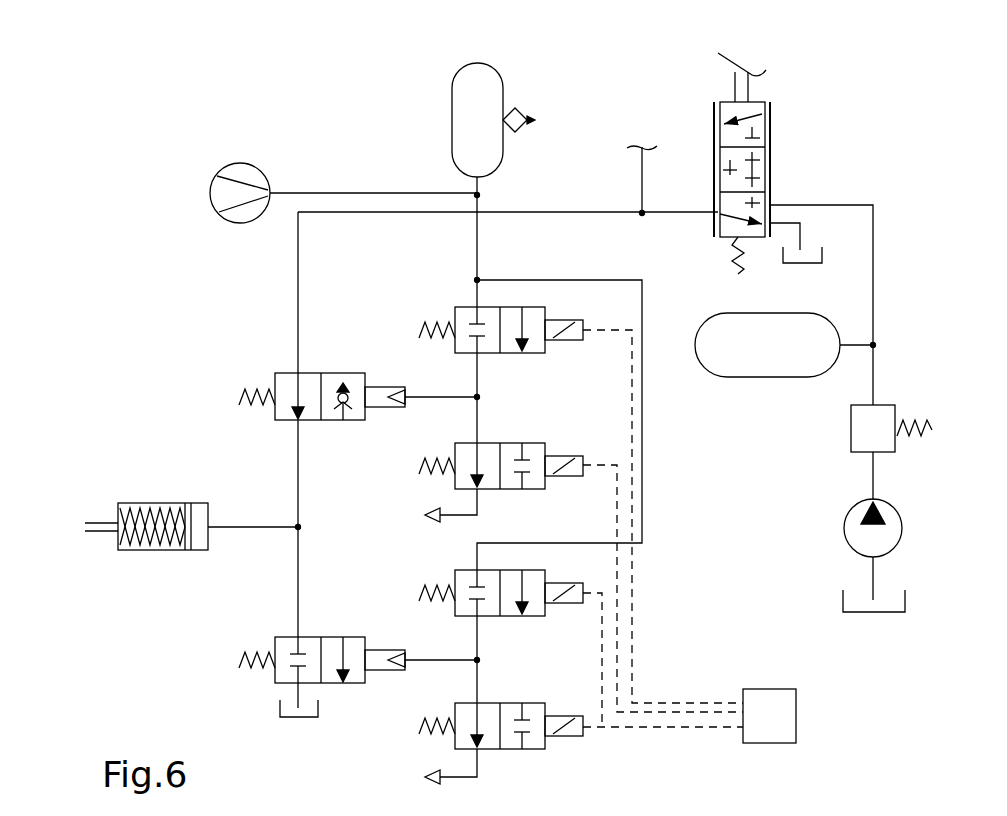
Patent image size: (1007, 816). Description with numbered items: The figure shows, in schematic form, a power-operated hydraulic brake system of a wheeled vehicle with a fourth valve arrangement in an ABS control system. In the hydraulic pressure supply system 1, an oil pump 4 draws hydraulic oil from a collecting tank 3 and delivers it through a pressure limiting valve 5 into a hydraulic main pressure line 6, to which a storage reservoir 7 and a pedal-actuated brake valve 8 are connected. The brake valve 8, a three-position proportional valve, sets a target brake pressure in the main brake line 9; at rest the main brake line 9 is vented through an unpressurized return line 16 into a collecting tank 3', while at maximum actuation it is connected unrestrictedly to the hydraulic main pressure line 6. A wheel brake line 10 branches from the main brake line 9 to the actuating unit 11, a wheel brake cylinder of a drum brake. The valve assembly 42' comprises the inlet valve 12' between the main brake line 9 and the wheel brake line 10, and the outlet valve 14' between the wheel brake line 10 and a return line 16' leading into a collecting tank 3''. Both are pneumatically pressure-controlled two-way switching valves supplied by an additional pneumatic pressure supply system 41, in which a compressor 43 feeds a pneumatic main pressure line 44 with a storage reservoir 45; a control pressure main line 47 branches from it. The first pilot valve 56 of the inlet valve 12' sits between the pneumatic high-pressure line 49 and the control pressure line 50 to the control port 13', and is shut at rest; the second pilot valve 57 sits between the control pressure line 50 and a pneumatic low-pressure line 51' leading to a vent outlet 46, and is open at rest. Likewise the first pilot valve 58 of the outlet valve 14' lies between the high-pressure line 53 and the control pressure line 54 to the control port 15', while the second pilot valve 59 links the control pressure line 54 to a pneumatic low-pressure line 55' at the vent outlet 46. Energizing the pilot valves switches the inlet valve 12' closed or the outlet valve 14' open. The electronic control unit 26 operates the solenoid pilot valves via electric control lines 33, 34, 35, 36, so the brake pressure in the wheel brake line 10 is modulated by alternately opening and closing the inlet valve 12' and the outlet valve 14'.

The hydraulic pressure supply system 1 is at (788, 481).
The collecting tank 3 is at (906, 590).
The collecting tank 3' is at (878, 241).
The collecting tank 3'' is at (253, 691).
The oil pump 4 is at (903, 533).
The pressure limiting valve 5 is at (866, 441).
The hydraulic main pressure line 6 is at (878, 308).
The storage reservoir 7 is at (760, 358).
The brake valve 8 is at (792, 162).
The main brake line 9 is at (678, 205).
The wheel brake line 10 is at (248, 526).
The actuating unit 11 is at (158, 502).
The inlet valve 12' is at (268, 361).
The control port 13' is at (385, 361).
The outlet valve 14' is at (271, 551).
The control port 15' is at (385, 630).
The return line 16 is at (843, 199).
The return line 16' is at (347, 708).
The electronic control unit 26 is at (798, 718).
The electric control line 33 is at (634, 455).
The electric control line 34 is at (619, 590).
The electric control line 35 is at (604, 637).
The electric control line 36 is at (708, 729).
The pneumatic pressure supply system 41 is at (308, 148).
The valve assembly 42' is at (152, 215).
The compressor 43 is at (229, 170).
The pneumatic main pressure line 44 is at (363, 190).
The storage reservoir 45 is at (464, 133).
The vent outlet 46 is at (423, 515).
The control pressure main line 47 is at (478, 245).
The pneumatic high-pressure line 49 is at (478, 295).
The control pressure line 50 is at (478, 405).
The pneumatic low-pressure line 51' is at (411, 496).
The high-pressure line 53 is at (567, 542).
The control pressure line 54 is at (478, 668).
The pneumatic low-pressure line 55' is at (412, 758).
The first pilot valve 56 is at (453, 290).
The second pilot valve 57 is at (408, 457).
The first pilot valve 58 is at (408, 564).
The second pilot valve 59 is at (565, 748).